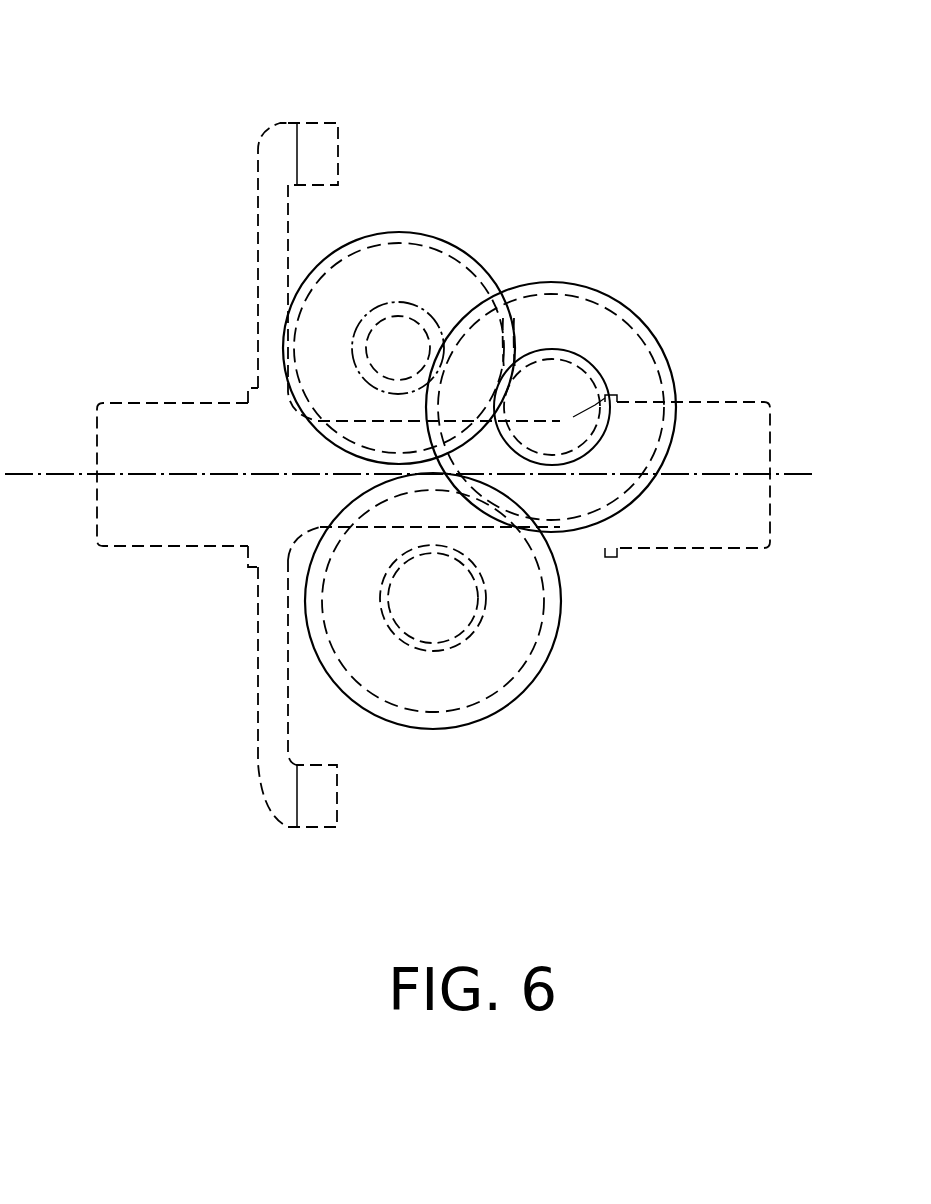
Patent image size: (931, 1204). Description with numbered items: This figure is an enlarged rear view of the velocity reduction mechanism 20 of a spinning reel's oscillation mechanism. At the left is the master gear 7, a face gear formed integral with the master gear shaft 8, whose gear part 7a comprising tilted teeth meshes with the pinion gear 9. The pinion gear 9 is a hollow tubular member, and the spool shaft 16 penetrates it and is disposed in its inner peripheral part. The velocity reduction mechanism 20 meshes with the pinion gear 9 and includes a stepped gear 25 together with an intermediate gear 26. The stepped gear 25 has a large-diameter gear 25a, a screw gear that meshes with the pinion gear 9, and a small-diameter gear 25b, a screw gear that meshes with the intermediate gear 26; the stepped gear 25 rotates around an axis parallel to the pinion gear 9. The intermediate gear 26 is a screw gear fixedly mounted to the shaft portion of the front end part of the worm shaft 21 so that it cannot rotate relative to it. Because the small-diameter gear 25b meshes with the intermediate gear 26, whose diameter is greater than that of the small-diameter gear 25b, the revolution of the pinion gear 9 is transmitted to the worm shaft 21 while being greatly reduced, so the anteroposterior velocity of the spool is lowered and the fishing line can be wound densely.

The master gear 7 is at (250, 414).
The gear part 7a is at (325, 143).
The master gear shaft 8 is at (695, 417).
The pinion gear 9 is at (553, 618).
The spool shaft 16 is at (433, 598).
The velocity reduction mechanism 20 is at (533, 371).
The worm shaft 21 is at (398, 348).
The stepped gear 25 is at (557, 397).
The large-diameter gear 25a is at (655, 367).
The small-diameter gear 25b is at (593, 453).
The intermediate gear 26 is at (417, 242).